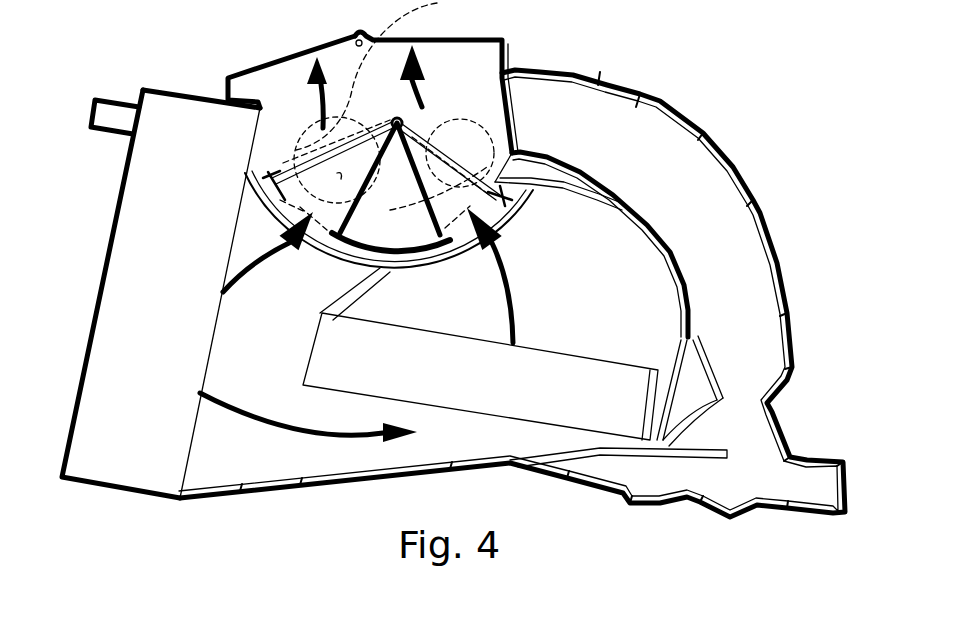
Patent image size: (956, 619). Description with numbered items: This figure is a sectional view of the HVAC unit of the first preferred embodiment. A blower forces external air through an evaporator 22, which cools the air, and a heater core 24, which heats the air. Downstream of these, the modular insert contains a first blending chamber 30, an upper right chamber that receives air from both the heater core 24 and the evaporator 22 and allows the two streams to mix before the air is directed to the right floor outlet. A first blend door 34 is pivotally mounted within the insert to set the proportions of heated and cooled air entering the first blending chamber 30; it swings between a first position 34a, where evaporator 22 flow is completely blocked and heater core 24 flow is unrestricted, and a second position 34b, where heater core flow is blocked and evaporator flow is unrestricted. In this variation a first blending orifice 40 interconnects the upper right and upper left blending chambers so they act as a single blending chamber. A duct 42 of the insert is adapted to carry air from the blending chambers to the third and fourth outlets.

The evaporator 22 is at (115, 433).
The heater core 24 is at (577, 393).
The first blending chamber 30 is at (340, 173).
The first blend door 34 is at (352, 255).
The first position of first blend door 34a is at (343, 173).
The second position of first blend door 34b is at (442, 128).
The first blending orifice 40 is at (391, 105).
The duct 42 is at (718, 222).